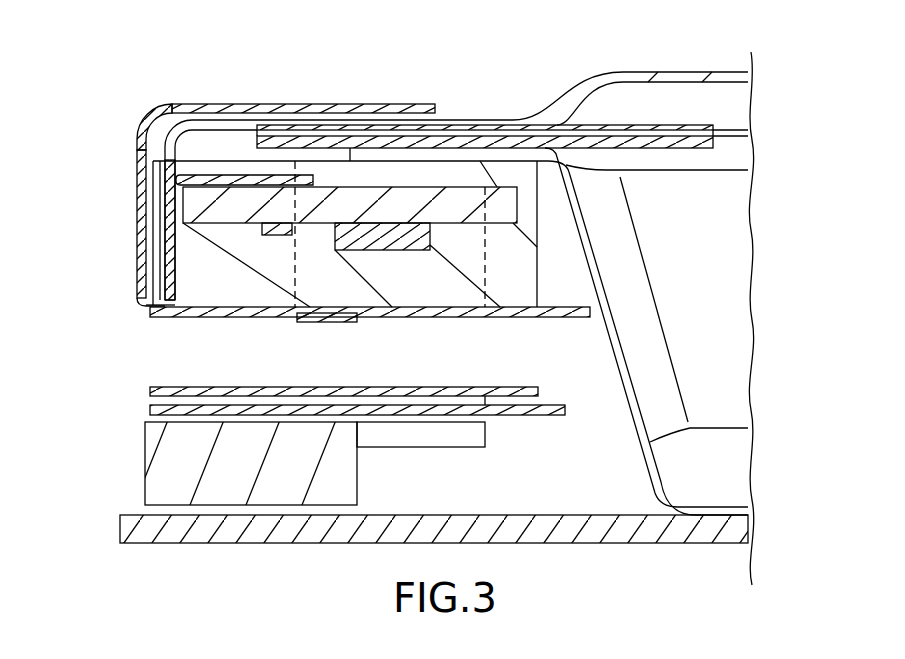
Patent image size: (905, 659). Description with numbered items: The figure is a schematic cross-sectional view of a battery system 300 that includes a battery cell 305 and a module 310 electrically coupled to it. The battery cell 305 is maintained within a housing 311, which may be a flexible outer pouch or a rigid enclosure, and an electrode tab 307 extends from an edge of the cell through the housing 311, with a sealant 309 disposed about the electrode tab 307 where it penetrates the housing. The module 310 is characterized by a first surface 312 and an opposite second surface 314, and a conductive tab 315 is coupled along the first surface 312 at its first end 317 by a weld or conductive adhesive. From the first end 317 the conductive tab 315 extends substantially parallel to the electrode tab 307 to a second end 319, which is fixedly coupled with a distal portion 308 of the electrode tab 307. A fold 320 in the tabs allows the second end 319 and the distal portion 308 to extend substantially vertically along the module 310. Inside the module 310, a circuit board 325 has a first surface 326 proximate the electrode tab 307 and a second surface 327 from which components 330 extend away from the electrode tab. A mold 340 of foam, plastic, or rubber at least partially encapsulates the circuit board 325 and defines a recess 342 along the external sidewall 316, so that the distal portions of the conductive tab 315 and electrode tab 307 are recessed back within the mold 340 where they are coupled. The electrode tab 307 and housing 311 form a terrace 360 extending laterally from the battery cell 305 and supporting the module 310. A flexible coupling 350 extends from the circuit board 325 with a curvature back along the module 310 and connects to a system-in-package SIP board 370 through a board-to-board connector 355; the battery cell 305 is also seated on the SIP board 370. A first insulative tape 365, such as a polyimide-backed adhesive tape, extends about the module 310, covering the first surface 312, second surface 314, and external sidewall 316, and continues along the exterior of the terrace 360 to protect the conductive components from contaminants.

The battery system 300 is at (126, 79).
The battery cell 305 is at (742, 368).
The electrode tab 307 is at (157, 207).
The distal portion 308 is at (155, 305).
The sealant 309 is at (267, 130).
The module 310 is at (200, 308).
The housing 311 is at (530, 122).
The first surface 312 is at (253, 316).
The second surface 314 is at (193, 170).
The conductive tab 315 is at (157, 273).
The external sidewall 316 is at (145, 302).
The first end 317 is at (270, 176).
The second end 319 is at (172, 305).
The fold 320 is at (143, 118).
The circuit board 325 is at (330, 190).
The first surface 326 is at (397, 187).
The second surface 327 is at (477, 225).
The components 330 is at (390, 250).
The mold 340 is at (320, 322).
The recess 342 is at (168, 228).
The flexible coupling 350 is at (150, 407).
The board-to-board connector 355 is at (145, 477).
The terrace 360 is at (530, 112).
The first insulative tape 365 is at (138, 147).
The SIP board 370 is at (142, 543).